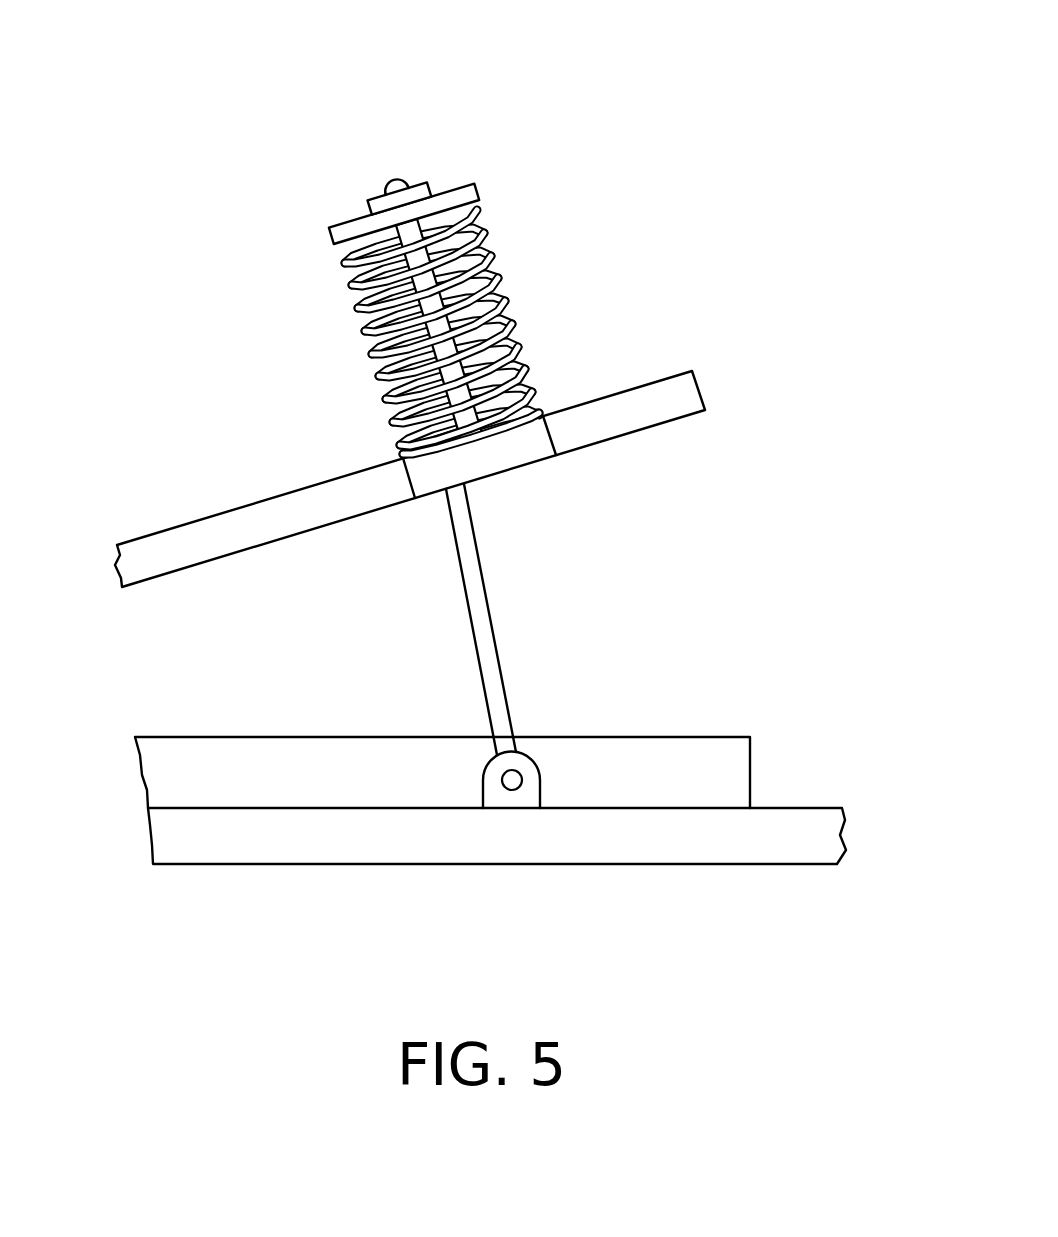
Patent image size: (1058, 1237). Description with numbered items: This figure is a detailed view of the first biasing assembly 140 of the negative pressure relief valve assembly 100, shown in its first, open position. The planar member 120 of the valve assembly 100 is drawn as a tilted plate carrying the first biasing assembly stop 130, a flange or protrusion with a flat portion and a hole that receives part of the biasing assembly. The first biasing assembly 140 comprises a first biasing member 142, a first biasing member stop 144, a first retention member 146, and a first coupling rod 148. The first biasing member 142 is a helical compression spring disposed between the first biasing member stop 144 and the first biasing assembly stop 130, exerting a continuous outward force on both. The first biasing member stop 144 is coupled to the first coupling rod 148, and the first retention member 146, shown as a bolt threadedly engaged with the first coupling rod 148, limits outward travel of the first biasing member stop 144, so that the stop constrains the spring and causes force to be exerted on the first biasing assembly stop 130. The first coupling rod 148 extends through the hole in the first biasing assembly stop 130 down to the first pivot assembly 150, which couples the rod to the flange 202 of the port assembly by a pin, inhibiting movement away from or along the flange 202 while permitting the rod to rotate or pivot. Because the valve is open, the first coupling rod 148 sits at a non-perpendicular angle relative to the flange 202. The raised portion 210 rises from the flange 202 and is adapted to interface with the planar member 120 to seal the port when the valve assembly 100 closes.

The negative pressure relief valve assembly 100 is at (622, 153).
The planar member 120 is at (242, 518).
The first biasing assembly stop 130 is at (495, 465).
The first biasing assembly 140 is at (368, 275).
The first biasing member 142 is at (505, 322).
The first biasing member stop 144 is at (457, 181).
The first retention member 146 is at (397, 177).
The first coupling rod 148 is at (483, 632).
The first pivot assembly 150 is at (540, 840).
The flange 202 is at (393, 851).
The raised portion 210 is at (295, 755).